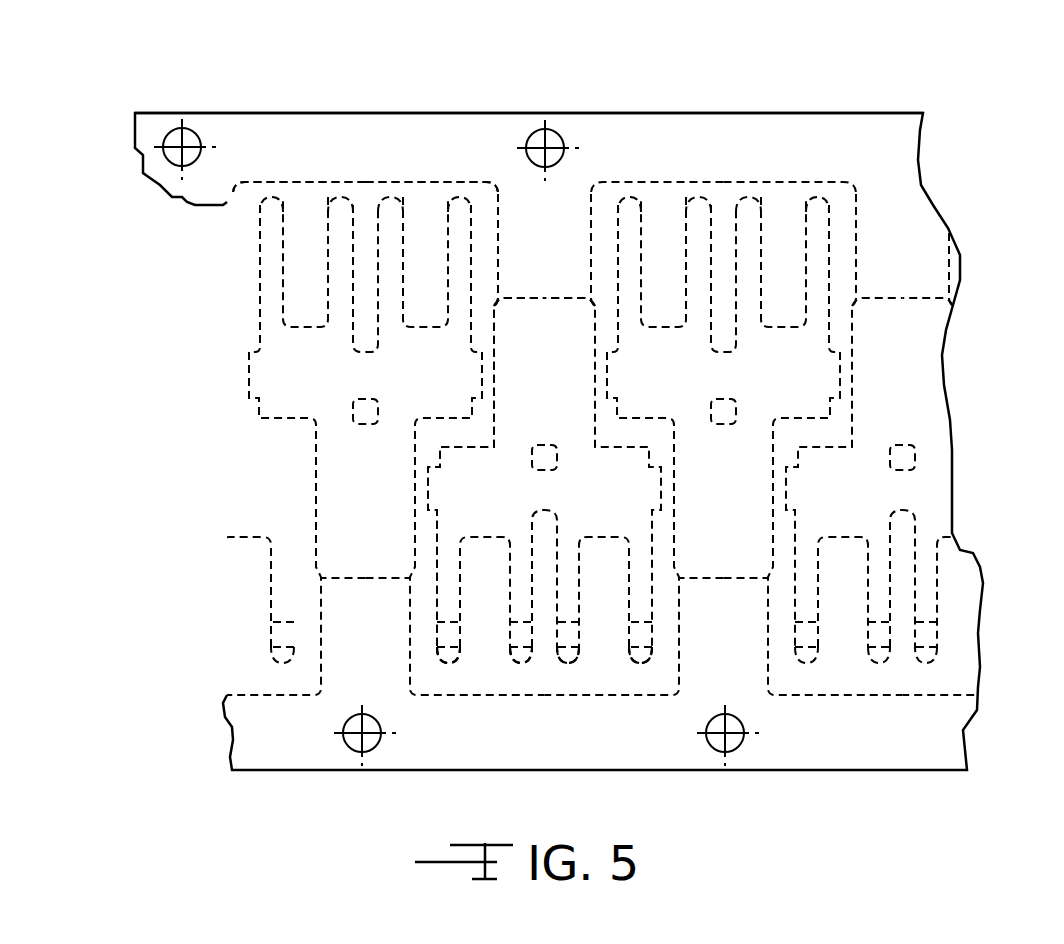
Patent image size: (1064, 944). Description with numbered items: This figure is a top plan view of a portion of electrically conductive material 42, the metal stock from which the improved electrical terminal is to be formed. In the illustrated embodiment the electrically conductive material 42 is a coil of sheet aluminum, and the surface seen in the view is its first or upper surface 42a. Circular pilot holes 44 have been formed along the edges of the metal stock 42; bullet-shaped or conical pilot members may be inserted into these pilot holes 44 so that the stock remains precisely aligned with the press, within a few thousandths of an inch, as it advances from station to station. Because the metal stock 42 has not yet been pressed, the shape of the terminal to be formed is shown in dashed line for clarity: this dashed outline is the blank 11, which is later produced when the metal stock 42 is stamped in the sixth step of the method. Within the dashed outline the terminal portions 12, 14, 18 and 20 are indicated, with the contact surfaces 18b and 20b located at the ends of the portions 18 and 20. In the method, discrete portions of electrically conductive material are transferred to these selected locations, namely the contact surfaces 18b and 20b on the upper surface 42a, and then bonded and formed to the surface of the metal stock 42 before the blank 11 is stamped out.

The blank 11 is at (838, 322).
The die pad section 12 is at (486, 336).
The connecting bar 14 is at (527, 325).
The outer lead 18 is at (447, 572).
The contact surface 18b is at (448, 638).
The inner lead 20 is at (518, 576).
The contact surface 20b is at (516, 635).
The electrically conductive material 42 is at (290, 135).
The upper surface 42a is at (367, 153).
The pilot holes 44 is at (565, 142).